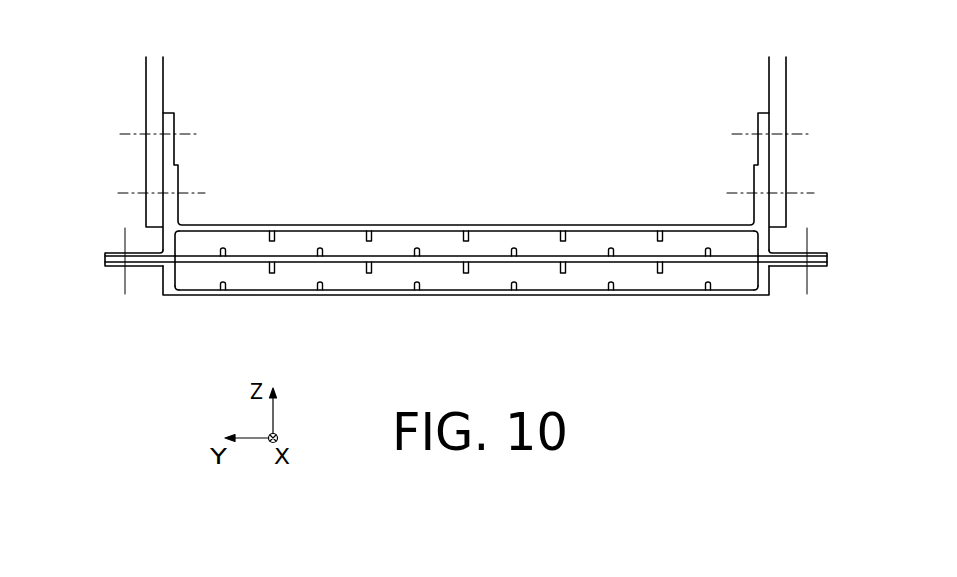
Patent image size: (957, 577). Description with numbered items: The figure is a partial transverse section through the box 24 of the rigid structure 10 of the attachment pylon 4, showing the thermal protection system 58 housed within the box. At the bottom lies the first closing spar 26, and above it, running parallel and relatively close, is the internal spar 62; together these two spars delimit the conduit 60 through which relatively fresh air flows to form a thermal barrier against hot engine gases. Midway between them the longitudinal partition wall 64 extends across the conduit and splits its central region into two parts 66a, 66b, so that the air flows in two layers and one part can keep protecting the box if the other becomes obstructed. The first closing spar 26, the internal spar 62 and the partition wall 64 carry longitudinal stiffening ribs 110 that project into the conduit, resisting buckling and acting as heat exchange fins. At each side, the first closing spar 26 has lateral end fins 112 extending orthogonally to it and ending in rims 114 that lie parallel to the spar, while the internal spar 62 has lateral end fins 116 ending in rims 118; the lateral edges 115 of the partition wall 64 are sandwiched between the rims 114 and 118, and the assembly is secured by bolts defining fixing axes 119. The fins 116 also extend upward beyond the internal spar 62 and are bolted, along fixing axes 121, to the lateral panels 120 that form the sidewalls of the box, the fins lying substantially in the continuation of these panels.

The lateral panel 120 is at (160, 70).
The fixing axis 121 is at (192, 132).
The fixing axis 119 is at (124, 228).
The rim 118 is at (105, 252).
The lateral edge 115 is at (104, 259).
The rim 114 is at (119, 270).
The lateral end fin 116 is at (172, 246).
The longitudinal stiffening rib 110 is at (320, 248).
The conduit 60 is at (466, 221).
The part of the conduit 66b is at (466, 221).
The internal spar 62 is at (503, 225).
The longitudinal partition wall 64 is at (578, 256).
The thermal protection system 58 is at (699, 187).
The lateral end fin 112 is at (177, 283).
The part of the conduit 66a is at (392, 286).
The first closing spar 26 is at (533, 293).
The box 24 is at (478, 351).
The rigid structure 10 is at (478, 351).
The attachment pylon 4 is at (730, 356).